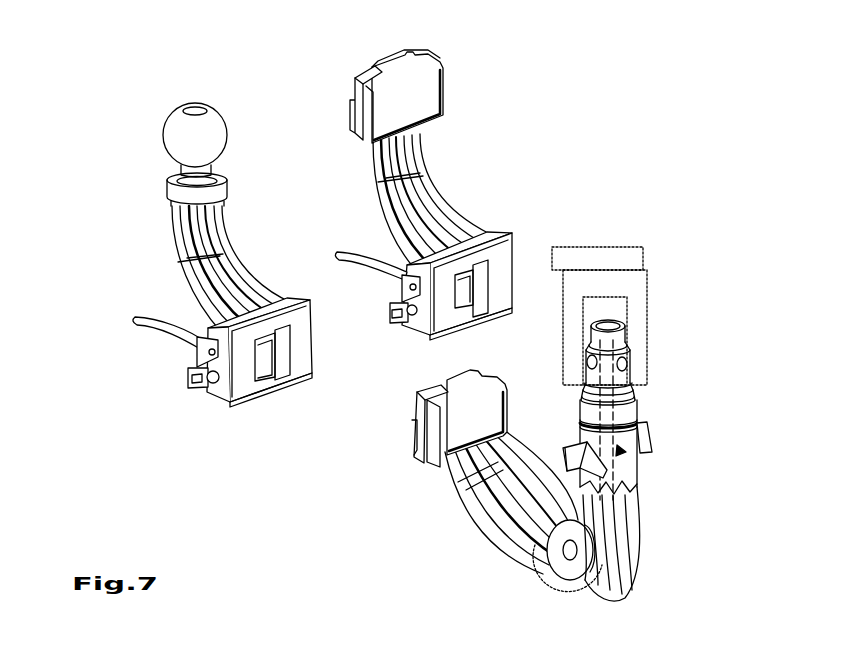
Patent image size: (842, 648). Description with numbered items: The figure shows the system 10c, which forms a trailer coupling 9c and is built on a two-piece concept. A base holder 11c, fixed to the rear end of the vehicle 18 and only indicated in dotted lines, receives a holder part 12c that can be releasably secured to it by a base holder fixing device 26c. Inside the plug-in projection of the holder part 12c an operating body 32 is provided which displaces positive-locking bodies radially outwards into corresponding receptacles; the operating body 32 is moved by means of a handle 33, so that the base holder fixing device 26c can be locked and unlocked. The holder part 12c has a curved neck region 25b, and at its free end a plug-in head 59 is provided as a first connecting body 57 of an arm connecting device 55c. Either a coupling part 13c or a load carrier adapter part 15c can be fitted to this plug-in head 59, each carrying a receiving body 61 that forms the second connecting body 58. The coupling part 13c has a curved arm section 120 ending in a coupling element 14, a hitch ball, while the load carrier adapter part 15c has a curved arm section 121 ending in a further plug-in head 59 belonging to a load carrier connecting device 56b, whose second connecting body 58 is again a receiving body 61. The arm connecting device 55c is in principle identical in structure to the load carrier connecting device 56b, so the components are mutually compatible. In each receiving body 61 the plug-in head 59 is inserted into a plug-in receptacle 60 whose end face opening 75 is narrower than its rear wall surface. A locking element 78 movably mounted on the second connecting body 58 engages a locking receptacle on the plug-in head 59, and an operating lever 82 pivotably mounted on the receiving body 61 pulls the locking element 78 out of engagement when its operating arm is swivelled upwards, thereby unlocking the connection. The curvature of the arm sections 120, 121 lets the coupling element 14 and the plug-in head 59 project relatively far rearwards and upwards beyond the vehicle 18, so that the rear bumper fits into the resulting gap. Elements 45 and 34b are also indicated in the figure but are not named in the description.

The trailer coupling 9c is at (143, 213).
The coupling element 14 is at (212, 118).
The ball head 45 is at (180, 131).
The arm section 120 is at (182, 238).
The coupling part 13c is at (231, 254).
The second connecting body 58 is at (277, 295).
The operating lever 82 is at (140, 328).
The locking element 78 is at (197, 387).
The receiving body 61 is at (247, 397).
The plug-in receptacle 60 is at (267, 368).
The end face opening 75 is at (282, 363).
The load carrier adapter part 15c is at (439, 213).
The arm section 121 is at (373, 168).
The plug-in head 59 is at (449, 90).
The load carrier connecting device 56b is at (445, 114).
The first connecting body 57 is at (452, 384).
The arm connecting device 55c is at (420, 458).
The holder part 12c is at (493, 508).
The neck region 25b is at (492, 533).
The handle 33 is at (558, 576).
The system 10c is at (606, 208).
The vehicle 18 is at (622, 253).
The base holder 11c is at (633, 288).
The cylindrical tip 34b is at (625, 363).
The base holder fixing device 26c is at (640, 418).
The operating body 32 is at (620, 483).